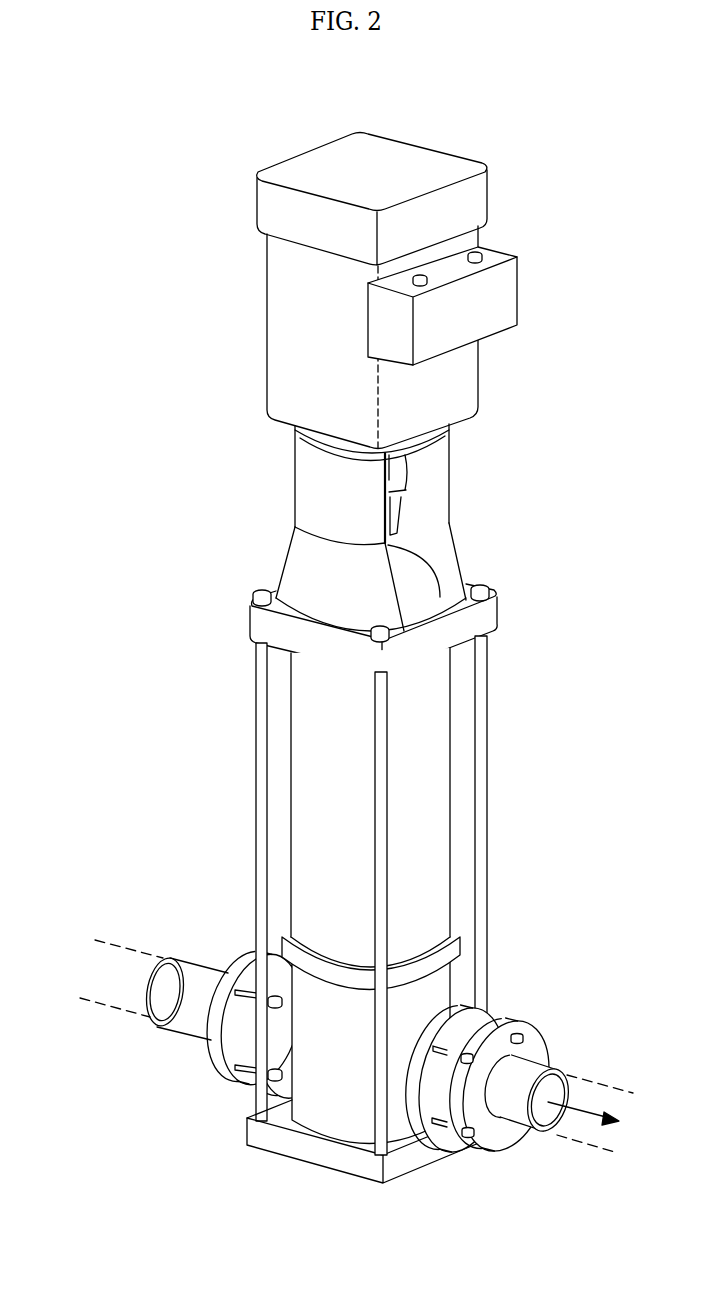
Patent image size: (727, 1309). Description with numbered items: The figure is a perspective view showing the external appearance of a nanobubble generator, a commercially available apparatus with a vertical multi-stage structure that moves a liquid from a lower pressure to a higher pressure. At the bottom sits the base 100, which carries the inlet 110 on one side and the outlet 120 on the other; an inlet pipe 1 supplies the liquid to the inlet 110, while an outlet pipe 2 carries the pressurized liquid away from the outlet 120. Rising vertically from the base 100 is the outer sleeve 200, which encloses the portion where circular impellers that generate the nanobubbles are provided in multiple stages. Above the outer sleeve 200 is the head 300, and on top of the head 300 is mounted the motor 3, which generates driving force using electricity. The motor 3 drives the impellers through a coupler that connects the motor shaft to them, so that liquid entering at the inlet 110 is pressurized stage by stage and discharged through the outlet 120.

The inlet pipe 1 is at (103, 1003).
The outlet pipe 2 is at (593, 1143).
The motor 3 is at (462, 382).
The base 100 is at (327, 1092).
The inlet 110 is at (188, 1013).
The outlet 120 is at (517, 1108).
The outer sleeve 200 is at (432, 853).
The head 300 is at (410, 580).